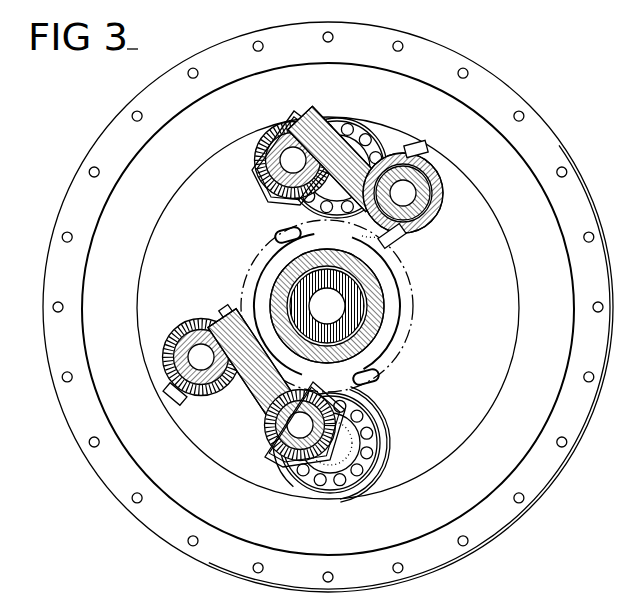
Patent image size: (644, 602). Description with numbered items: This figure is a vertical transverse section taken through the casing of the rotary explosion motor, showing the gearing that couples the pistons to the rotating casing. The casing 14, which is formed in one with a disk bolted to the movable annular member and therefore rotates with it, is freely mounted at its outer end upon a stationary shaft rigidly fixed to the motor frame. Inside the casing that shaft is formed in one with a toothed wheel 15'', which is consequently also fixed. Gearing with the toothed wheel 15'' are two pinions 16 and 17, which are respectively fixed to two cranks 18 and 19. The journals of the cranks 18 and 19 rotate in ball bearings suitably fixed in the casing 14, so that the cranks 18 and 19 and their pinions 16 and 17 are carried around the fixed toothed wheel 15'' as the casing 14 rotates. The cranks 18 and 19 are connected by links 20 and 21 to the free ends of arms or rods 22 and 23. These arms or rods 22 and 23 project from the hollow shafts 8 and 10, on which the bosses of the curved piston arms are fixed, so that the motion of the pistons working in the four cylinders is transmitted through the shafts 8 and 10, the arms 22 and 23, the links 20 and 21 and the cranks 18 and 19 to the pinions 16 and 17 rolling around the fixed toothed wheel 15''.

The hollow shaft 8 is at (273, 288).
The hollow shaft 10 is at (252, 366).
The casing 14 is at (328, 307).
The toothed wheel 15'' is at (351, 306).
The pinion 16 is at (382, 448).
The pinion 17 is at (338, 121).
The crank 18 is at (264, 435).
The crank 19 is at (262, 181).
The link 20 is at (257, 398).
The link 21 is at (310, 247).
The arm or rod 22 is at (178, 358).
The arm or rod 23 is at (436, 203).